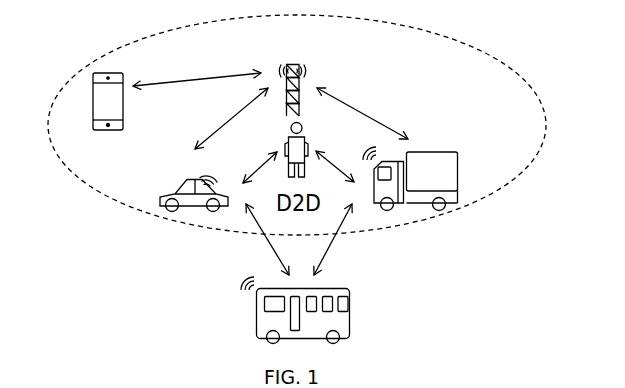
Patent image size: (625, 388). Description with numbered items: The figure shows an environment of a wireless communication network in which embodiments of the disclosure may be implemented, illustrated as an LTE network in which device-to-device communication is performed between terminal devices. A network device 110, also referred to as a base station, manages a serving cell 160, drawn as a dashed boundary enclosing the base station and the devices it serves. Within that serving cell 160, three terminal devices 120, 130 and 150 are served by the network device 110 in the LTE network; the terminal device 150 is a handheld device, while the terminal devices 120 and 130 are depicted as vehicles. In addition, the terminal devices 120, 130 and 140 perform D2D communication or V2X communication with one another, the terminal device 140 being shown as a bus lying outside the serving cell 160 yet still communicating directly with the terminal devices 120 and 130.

The network device 110 is at (306, 65).
The terminal device 120 is at (144, 185).
The terminal device 130 is at (451, 173).
The terminal device 140 is at (344, 303).
The terminal device 150 is at (83, 120).
The serving cell 160 is at (480, 44).